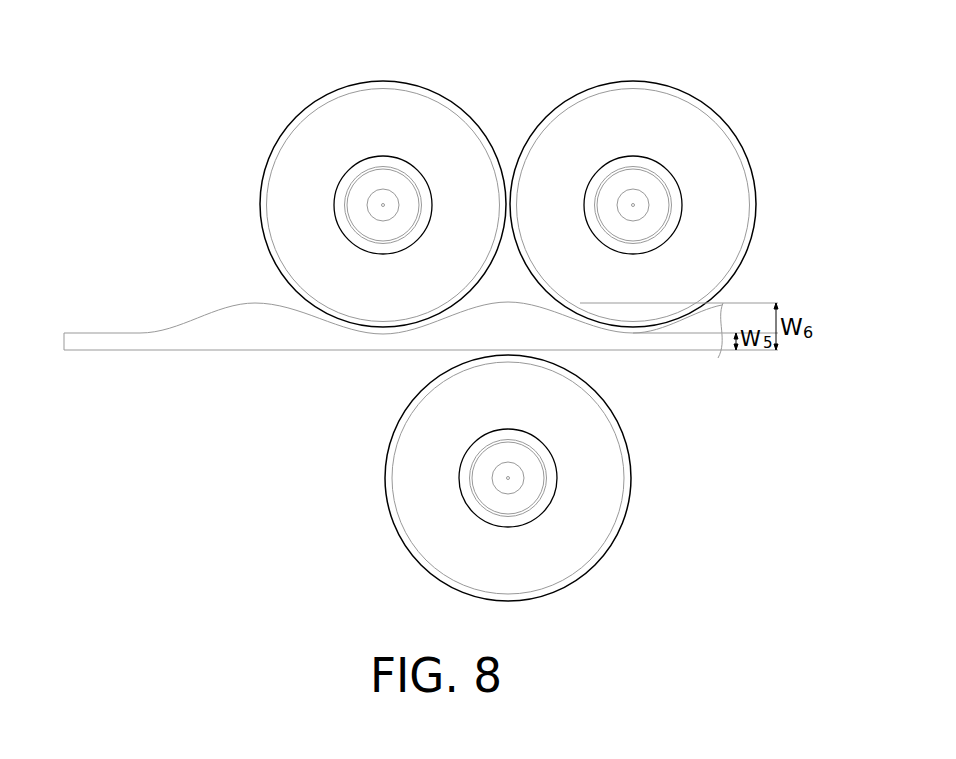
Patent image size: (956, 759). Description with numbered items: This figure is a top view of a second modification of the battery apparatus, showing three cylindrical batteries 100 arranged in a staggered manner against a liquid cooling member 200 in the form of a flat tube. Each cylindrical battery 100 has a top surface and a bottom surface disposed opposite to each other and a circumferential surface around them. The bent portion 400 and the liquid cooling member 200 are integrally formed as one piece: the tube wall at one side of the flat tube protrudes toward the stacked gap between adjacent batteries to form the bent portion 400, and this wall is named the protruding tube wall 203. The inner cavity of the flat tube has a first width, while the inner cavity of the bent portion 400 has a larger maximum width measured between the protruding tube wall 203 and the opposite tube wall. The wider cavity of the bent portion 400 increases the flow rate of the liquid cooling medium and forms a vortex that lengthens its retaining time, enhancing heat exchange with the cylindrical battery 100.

The cylindrical battery 100 is at (388, 115).
The liquid cooling member 200 is at (695, 342).
The protruding tube wall 203 is at (252, 300).
The bent portion 400 is at (418, 304).